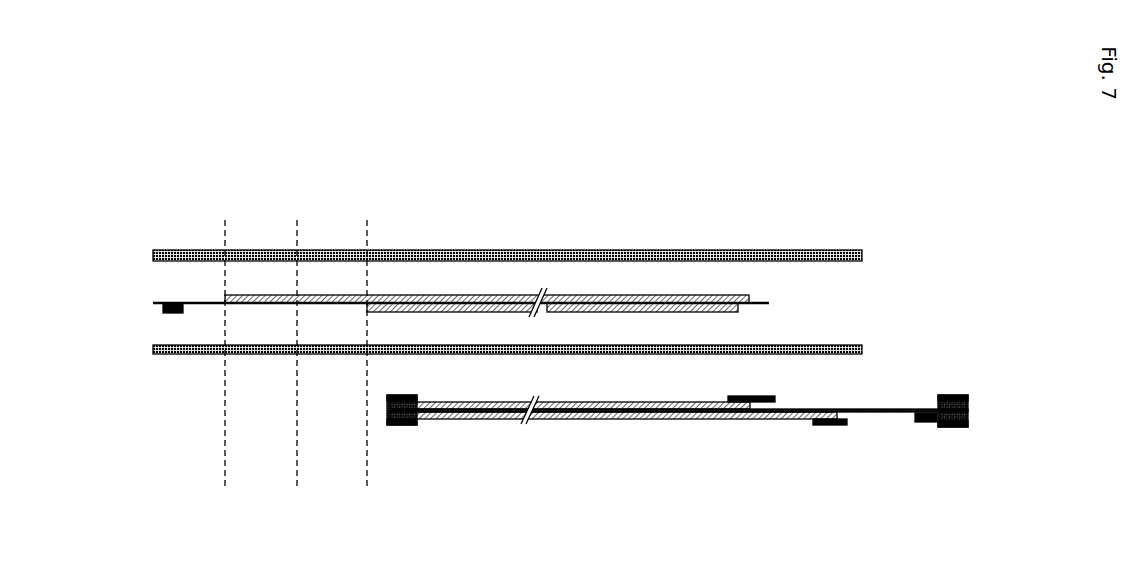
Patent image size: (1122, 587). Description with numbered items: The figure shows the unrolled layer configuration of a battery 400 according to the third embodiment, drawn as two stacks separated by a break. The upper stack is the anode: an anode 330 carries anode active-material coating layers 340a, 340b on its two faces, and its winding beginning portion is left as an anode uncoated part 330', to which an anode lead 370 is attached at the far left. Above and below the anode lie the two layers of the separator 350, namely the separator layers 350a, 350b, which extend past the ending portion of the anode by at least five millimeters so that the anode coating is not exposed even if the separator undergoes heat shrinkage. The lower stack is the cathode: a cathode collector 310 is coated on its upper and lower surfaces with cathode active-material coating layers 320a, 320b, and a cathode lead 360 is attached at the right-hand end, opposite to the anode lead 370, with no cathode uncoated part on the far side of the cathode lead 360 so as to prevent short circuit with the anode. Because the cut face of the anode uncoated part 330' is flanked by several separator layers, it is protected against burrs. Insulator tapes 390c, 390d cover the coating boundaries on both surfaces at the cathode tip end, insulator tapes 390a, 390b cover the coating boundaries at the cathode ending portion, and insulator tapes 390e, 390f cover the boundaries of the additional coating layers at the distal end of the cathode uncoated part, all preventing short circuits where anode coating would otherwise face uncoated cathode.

The input sensing unit 400 is at (753, 152).
The separator 350 is at (975, 250).
The upper cover layer 350a is at (866, 256).
The lower cover layer 350b is at (866, 350).
The sensing electrode 330 is at (487, 256).
The first electrode layer 340a is at (625, 293).
The second electrode layer 340b is at (485, 295).
The anode uncoated part 330' is at (467, 297).
The anode lead 370 is at (152, 312).
The first substrate layer 320a is at (483, 420).
The base film 310 is at (567, 420).
The second substrate layer 320b is at (627, 420).
The insulator tape 390a is at (737, 396).
The insulator tape 390b is at (826, 426).
The insulator tape 390c is at (404, 395).
The insulator tape 390d is at (405, 425).
The insulator tape 390e is at (960, 396).
The insulator tape 390f is at (962, 427).
The cathode lead 360 is at (925, 423).